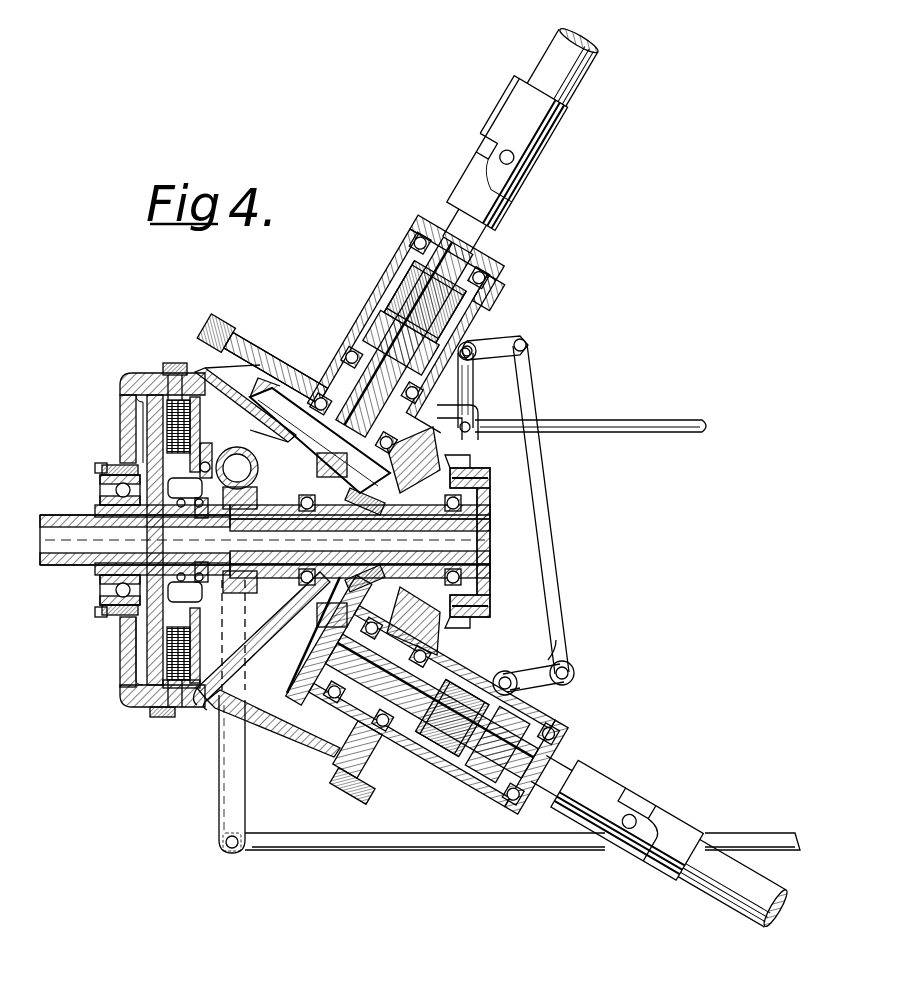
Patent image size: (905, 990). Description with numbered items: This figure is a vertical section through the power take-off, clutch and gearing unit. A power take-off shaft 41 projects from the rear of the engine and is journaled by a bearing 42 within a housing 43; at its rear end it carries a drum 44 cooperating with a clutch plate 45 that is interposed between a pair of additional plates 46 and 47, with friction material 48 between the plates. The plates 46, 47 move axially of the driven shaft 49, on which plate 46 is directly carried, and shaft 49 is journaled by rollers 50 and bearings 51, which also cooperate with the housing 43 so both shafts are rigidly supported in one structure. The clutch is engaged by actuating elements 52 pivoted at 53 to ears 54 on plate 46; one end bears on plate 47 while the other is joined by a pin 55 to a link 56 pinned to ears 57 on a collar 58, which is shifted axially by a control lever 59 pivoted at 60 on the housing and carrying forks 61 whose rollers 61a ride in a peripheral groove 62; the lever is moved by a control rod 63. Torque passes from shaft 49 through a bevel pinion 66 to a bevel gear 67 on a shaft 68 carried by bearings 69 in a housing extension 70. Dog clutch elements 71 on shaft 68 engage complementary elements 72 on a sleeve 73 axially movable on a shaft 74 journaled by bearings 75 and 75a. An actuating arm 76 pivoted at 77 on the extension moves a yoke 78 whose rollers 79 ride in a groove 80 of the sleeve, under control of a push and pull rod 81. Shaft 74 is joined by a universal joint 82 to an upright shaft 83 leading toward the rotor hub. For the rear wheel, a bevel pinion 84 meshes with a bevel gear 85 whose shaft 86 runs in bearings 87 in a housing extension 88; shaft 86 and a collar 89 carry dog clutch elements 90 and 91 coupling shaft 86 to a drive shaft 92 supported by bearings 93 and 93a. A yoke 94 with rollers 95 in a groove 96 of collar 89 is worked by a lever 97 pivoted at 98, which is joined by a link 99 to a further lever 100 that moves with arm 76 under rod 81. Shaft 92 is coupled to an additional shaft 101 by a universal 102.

The power take-off shaft 41 is at (68, 566).
The bearing 42 is at (105, 618).
The housing 43 is at (120, 690).
The drum 44 is at (128, 420).
The clutch plate 45 is at (183, 398).
The clutch plate 46 is at (167, 655).
The clutch plate 47 is at (200, 708).
The friction material 48 is at (170, 365).
The driven shaft 49 is at (272, 515).
The rollers 50 is at (105, 578).
The bearings 51 is at (315, 503).
The actuating element 52 is at (210, 452).
The pivot 53 is at (240, 455).
The ears 54 is at (214, 430).
The pin 55 is at (125, 475).
The link 56 is at (208, 582).
The ears 57 is at (102, 468).
The collar 58 is at (300, 650).
The control lever 59 is at (219, 777).
The pivot 60 is at (248, 400).
The forks 61 is at (258, 488).
The rollers 61a is at (252, 593).
The peripheral groove 62 is at (248, 605).
The control rod 63 is at (410, 850).
The bevel pinion 66 is at (372, 590).
The bevel gear 67 is at (470, 462).
The shaft 68 is at (406, 402).
The bearings 69 is at (345, 352).
The housing extension 70 is at (485, 312).
The dog clutch elements 71 is at (455, 432).
The dog clutch elements 72 is at (380, 330).
The sleeve 73 is at (380, 290).
The shaft 74 is at (480, 258).
The bearing 75 is at (490, 278).
The bearing 75a is at (355, 340).
The actuating arm 76 is at (470, 400).
The pivot 77 is at (478, 358).
The yoke 78 is at (470, 332).
The rollers 79 is at (412, 258).
The peripheral groove 80 is at (395, 300).
The push and pull rod 81 is at (625, 412).
The universal joint 82 is at (475, 175).
The shaft 83 is at (547, 53).
The bevel pinion 84 is at (362, 485).
The bevel gear 85 is at (322, 646).
The shaft 86 is at (310, 730).
The bearings 87 is at (385, 633).
The housing extension 88 is at (435, 765).
The collar 89 is at (555, 718).
The dog clutch element 90 is at (372, 755).
The dog clutch element 91 is at (375, 790).
The drive shaft 92 is at (575, 760).
The bearing 93 is at (520, 810).
The bearing 93a is at (365, 735).
The yoke 94 is at (530, 700).
The rollers 95 is at (478, 780).
The peripheral groove 96 is at (500, 676).
The lever 97 is at (545, 665).
The pivot 98 is at (562, 639).
The link 99 is at (548, 524).
The lever 100 is at (528, 360).
The shaft 101 is at (730, 900).
The universal 102 is at (610, 780).